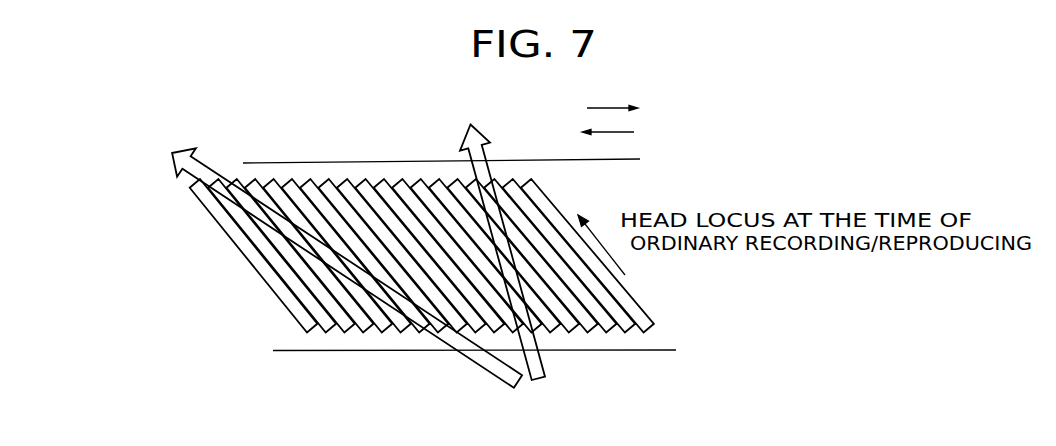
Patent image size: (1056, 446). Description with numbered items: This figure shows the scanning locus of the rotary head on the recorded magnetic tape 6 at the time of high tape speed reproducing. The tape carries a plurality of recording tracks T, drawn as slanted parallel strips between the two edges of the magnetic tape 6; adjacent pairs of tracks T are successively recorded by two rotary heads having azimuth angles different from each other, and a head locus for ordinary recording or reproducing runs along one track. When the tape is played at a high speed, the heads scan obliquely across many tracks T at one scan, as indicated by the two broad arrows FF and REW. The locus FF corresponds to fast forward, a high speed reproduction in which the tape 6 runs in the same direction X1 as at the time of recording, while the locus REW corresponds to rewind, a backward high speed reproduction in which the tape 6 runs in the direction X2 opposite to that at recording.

The recorded magnetic tape 6 is at (634, 351).
The recording tracks T is at (267, 272).
The scanning locus at the time of rewind REW is at (225, 167).
The scanning locus at the time of fast forward FF is at (488, 153).
The tape running direction at the time of recording X1 is at (624, 135).
The tape running direction opposite to recording X2 is at (595, 111).